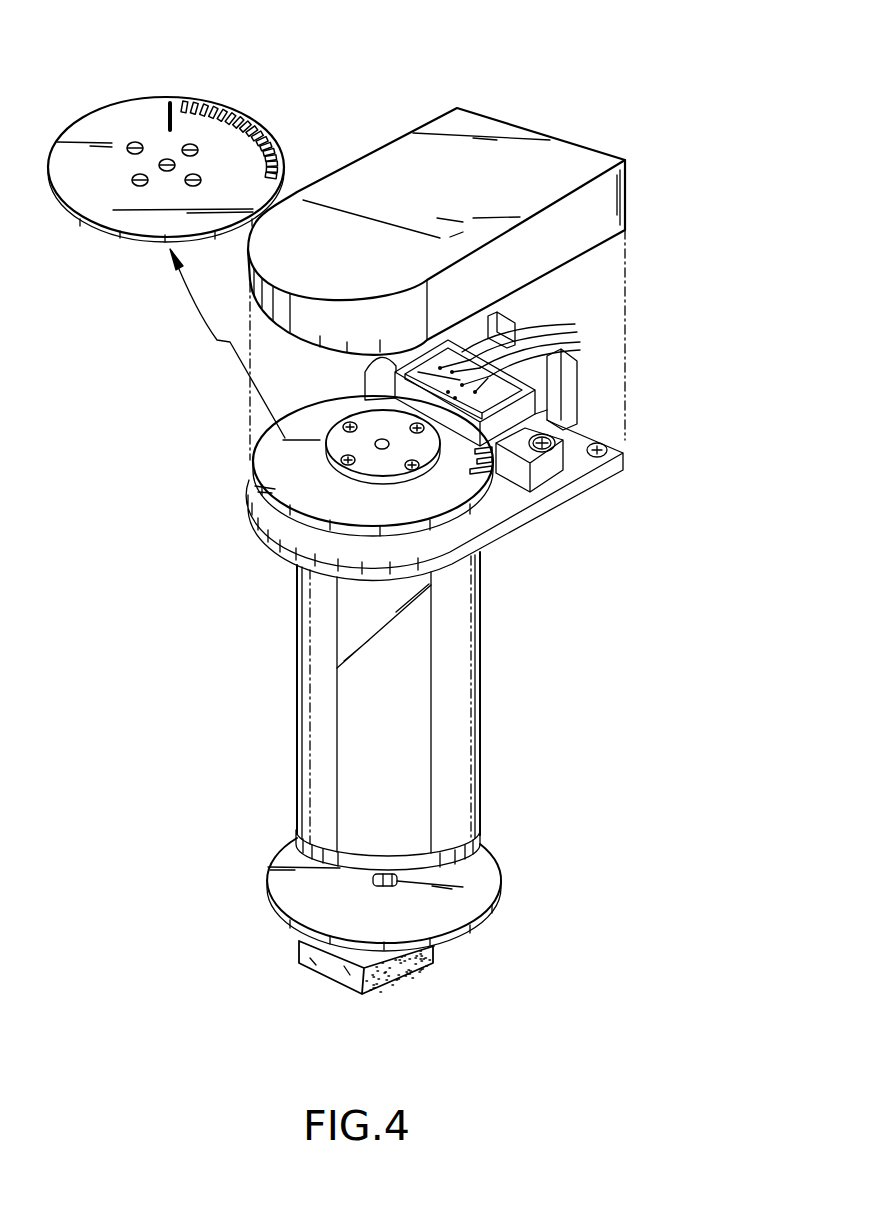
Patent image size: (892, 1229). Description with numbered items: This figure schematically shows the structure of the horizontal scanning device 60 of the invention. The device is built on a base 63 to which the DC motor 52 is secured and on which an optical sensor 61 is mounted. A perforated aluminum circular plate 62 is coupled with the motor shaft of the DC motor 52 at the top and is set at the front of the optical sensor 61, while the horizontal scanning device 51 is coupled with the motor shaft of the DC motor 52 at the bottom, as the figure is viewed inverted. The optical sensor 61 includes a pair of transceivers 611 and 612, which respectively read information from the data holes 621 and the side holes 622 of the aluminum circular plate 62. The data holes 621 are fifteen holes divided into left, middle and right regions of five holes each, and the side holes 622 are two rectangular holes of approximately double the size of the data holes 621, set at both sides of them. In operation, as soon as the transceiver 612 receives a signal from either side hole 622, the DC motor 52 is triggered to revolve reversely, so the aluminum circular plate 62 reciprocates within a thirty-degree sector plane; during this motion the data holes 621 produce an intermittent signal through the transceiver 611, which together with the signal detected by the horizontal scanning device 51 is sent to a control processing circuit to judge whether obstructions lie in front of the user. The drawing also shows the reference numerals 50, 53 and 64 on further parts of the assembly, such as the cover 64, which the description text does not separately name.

The motor unit 50 is at (280, 700).
The horizontal scanning device 51 is at (322, 978).
The DC motor 52 is at (295, 798).
The lower disc 53 is at (288, 895).
The horizontal scanning device 60 is at (652, 343).
The optical sensor 61 is at (565, 432).
The transceiver 611 is at (407, 360).
The transceiver 612 is at (397, 378).
The aluminum circular plate 62 is at (140, 98).
The data holes 621 is at (233, 110).
The side holes 622 is at (282, 158).
The base 63 is at (550, 503).
The cover 64 is at (542, 140).